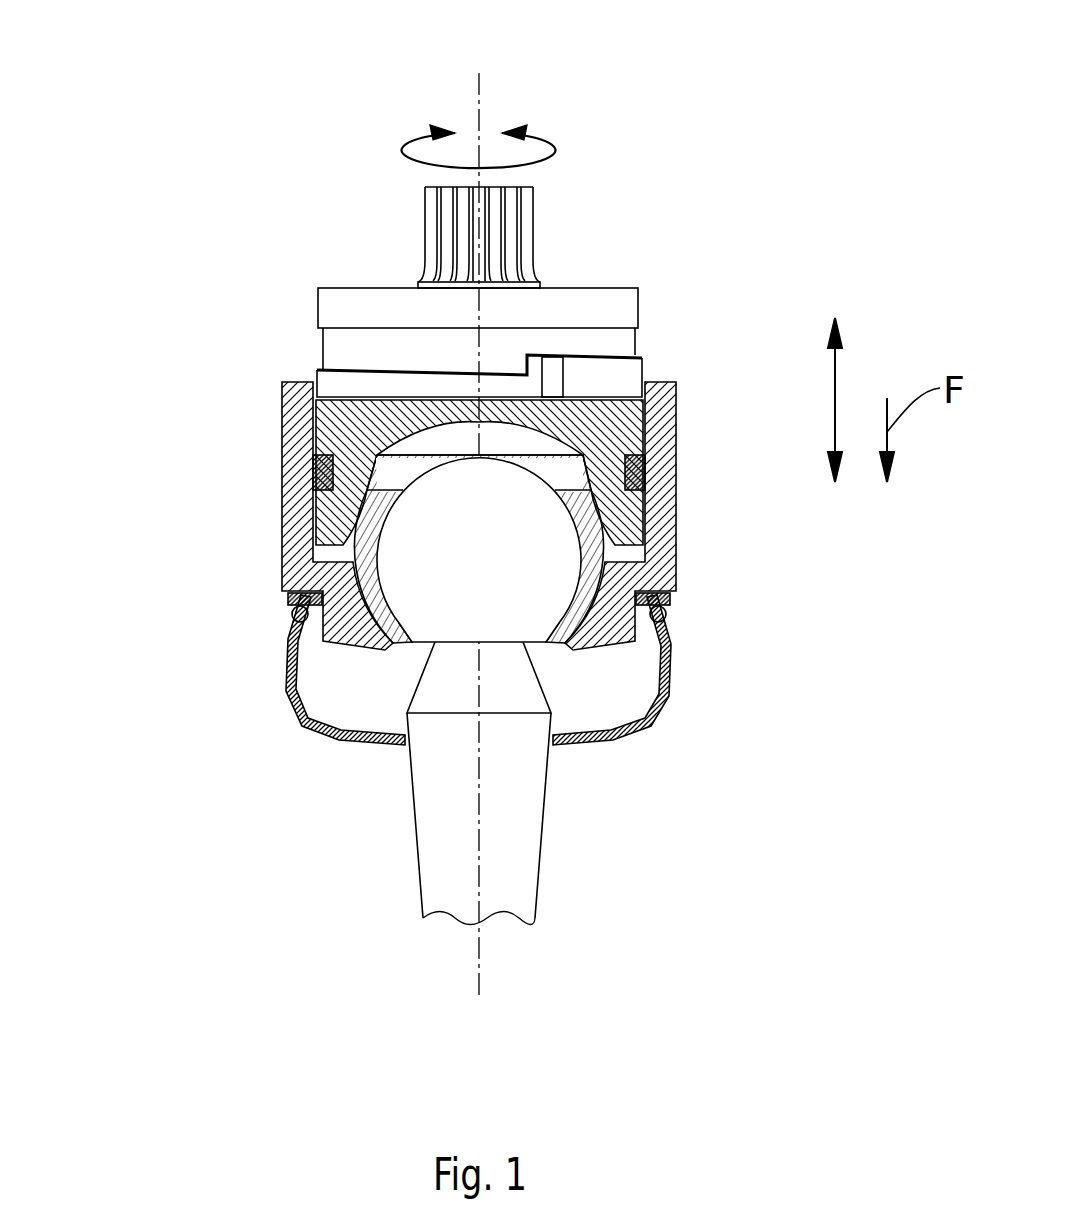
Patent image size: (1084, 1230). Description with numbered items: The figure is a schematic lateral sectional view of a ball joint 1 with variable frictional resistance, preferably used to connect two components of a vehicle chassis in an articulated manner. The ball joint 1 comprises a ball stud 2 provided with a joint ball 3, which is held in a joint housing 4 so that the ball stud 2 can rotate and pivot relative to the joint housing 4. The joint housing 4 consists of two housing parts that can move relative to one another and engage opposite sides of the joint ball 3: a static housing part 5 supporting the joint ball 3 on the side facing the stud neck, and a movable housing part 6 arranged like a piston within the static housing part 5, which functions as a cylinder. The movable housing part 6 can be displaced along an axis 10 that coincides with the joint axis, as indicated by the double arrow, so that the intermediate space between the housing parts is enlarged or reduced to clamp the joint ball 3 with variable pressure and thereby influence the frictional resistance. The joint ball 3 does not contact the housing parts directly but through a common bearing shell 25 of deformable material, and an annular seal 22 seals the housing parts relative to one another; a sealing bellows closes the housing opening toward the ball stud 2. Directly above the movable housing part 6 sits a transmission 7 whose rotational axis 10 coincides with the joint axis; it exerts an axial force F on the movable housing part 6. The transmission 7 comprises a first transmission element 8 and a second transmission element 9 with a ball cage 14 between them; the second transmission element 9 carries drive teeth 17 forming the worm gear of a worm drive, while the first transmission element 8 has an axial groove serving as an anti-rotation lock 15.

The ball joint 1 is at (162, 422).
The ball stud 2 is at (518, 877).
The joint ball 3 is at (523, 568).
The joint housing 4 is at (618, 525).
The static housing part 5 is at (607, 602).
The movable housing part 6 is at (613, 432).
The transmission 7 is at (665, 220).
The first transmission element 8 is at (338, 388).
The second transmission element 9 is at (620, 308).
The rotational axis 10 is at (479, 93).
The ball cage 14 is at (338, 350).
The anti-rotation lock 15 is at (557, 378).
The drive teeth 17 is at (417, 218).
The annular seal 22 is at (322, 470).
The bearing shell 25 is at (605, 553).